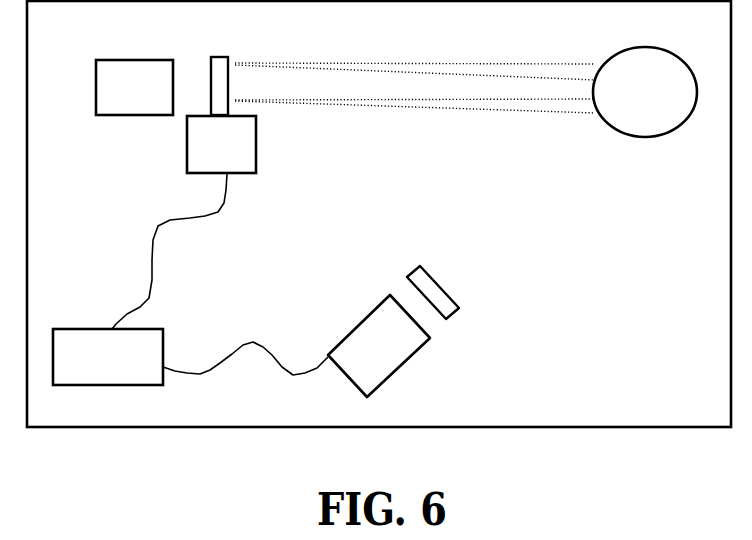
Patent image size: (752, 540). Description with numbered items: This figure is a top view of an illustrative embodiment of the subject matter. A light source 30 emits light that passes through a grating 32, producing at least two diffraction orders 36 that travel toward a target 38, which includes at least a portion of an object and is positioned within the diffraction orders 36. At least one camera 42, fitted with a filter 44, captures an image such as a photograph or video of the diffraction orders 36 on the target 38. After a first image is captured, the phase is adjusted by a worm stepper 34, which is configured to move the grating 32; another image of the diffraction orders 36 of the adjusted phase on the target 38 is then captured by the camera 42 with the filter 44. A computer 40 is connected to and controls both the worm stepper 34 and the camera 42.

The light source 30 is at (134, 87).
The grating 32 is at (218, 80).
The worm stepper 34 is at (221, 144).
The diffraction orders 36 is at (478, 63).
The target 38 is at (645, 92).
The computer 40 is at (108, 357).
The camera 42 is at (379, 346).
The filter 44 is at (452, 312).